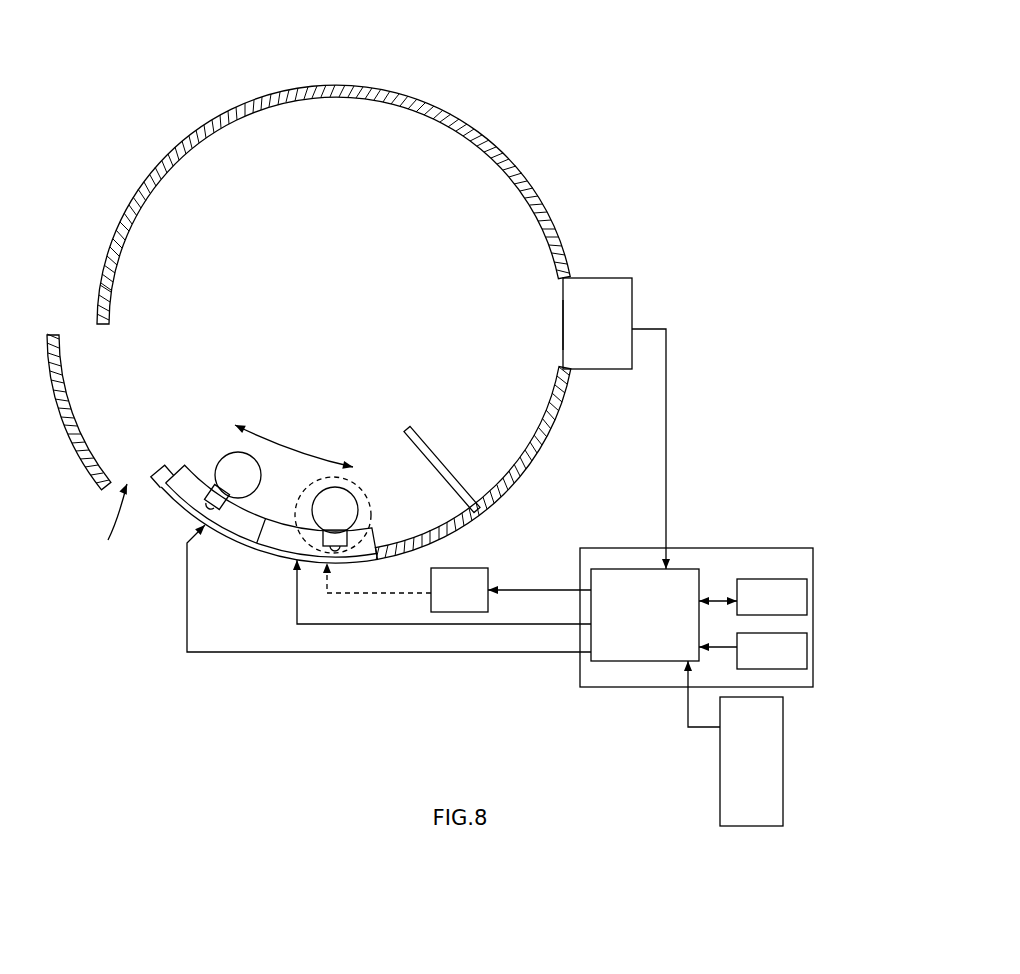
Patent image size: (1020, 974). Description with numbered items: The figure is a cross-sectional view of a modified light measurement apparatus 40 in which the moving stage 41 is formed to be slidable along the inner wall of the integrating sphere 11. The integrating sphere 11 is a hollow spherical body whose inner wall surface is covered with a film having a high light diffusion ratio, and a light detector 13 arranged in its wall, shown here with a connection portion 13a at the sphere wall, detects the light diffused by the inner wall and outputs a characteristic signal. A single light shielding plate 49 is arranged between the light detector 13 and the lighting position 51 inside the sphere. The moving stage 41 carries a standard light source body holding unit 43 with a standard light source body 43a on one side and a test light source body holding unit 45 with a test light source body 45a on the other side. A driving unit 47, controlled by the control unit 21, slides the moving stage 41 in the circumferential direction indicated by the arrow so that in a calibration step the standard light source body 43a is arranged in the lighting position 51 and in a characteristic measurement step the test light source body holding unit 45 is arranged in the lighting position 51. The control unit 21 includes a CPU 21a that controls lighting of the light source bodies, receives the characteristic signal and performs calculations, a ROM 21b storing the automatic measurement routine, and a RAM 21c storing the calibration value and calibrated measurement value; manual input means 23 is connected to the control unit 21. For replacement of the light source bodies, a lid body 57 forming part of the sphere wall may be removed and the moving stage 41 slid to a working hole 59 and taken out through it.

The light measurement apparatus 40 is at (625, 62).
The integrating sphere 11 is at (120, 228).
The light detector 13 is at (585, 333).
The drum connection portion 13a is at (562, 326).
The light shielding plate 49 is at (440, 467).
The lighting position 51 is at (368, 500).
The lid body 57 is at (88, 475).
The working hole 59 is at (107, 522).
The moving stage 41 is at (247, 548).
The standard light source body holding unit 43 is at (195, 488).
The standard light source body 43a is at (222, 470).
The test light source body holding unit 45 is at (275, 531).
The test light source body 45a is at (337, 508).
The driving unit 47 is at (449, 605).
The control unit 21 is at (732, 572).
The CPU 21a is at (630, 629).
The ROM 21b is at (757, 663).
The RAM 21c is at (757, 608).
The manual input means 23 is at (742, 777).